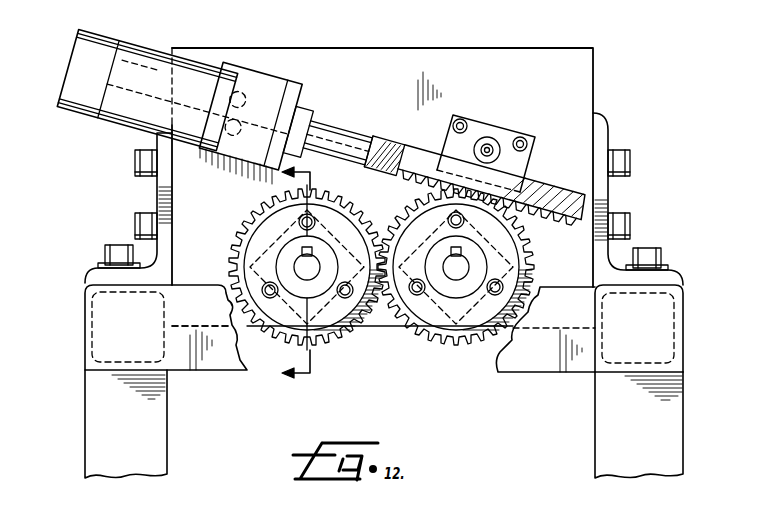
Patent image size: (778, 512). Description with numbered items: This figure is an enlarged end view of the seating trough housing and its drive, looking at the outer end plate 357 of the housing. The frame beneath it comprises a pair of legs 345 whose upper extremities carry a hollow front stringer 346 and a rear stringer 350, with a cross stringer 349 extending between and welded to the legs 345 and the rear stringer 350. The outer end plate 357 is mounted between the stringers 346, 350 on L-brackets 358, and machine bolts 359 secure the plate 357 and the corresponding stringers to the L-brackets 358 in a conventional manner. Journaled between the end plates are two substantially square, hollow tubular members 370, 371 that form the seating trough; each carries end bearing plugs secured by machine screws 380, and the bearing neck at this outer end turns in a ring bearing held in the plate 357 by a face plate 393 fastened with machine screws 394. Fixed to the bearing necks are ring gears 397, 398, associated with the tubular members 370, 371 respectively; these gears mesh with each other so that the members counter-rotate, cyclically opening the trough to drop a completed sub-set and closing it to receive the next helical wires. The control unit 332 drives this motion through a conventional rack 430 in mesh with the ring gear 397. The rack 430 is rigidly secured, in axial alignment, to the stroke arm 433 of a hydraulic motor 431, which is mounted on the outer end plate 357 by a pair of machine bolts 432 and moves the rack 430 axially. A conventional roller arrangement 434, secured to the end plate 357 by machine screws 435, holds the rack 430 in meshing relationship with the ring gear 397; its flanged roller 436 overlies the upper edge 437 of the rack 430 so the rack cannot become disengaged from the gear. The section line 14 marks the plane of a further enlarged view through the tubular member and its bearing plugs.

The section line 14— 14 is at (309, 273).
The control unit 332 is at (102, 127).
The legs 345 is at (88, 402).
The front stringer 346 is at (678, 324).
The cross stringer 349 is at (176, 362).
The rear stringer 350 is at (94, 322).
The outer end plate 357 is at (562, 62).
The L-brackets 358 is at (158, 201).
The machine bolts 359 is at (133, 168).
The tubular member 370 is at (432, 334).
The tubular member 371 is at (258, 243).
The machine screws 380 is at (244, 218).
The face plate 393 is at (384, 221).
The machine screws 394 is at (298, 214).
The ring gear 397 is at (452, 340).
The ring gear 398 is at (292, 348).
The rack 430 is at (535, 190).
The hydraulic motor 431 is at (146, 53).
The machine bolts 432 is at (245, 96).
The stroke arm 433 is at (316, 120).
The roller arrangement 434 is at (484, 114).
The machine screws 435 is at (527, 141).
The flanged roller 436 is at (491, 142).
The upper edge 437 is at (392, 140).